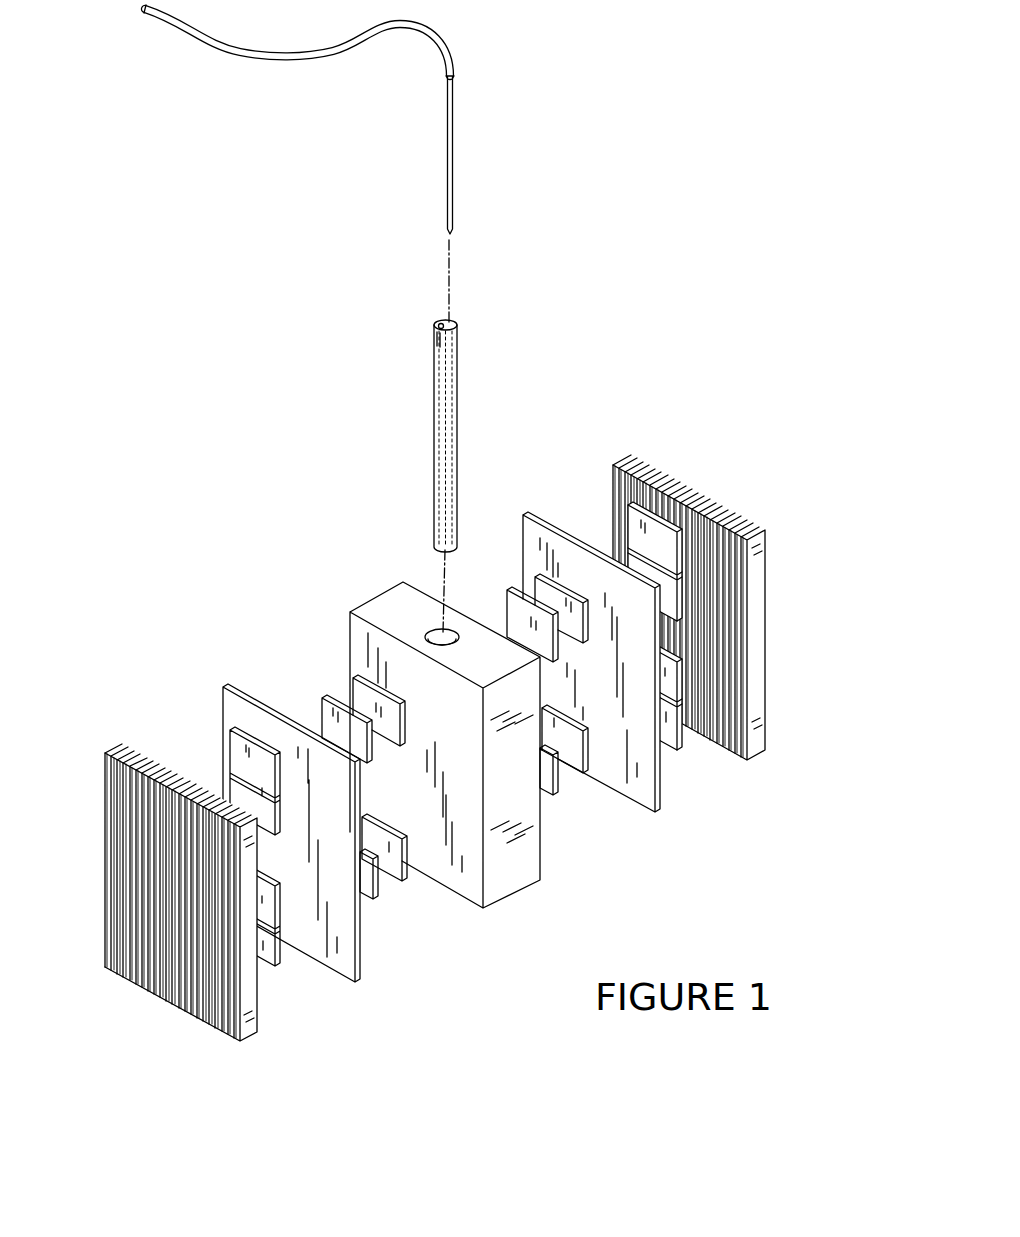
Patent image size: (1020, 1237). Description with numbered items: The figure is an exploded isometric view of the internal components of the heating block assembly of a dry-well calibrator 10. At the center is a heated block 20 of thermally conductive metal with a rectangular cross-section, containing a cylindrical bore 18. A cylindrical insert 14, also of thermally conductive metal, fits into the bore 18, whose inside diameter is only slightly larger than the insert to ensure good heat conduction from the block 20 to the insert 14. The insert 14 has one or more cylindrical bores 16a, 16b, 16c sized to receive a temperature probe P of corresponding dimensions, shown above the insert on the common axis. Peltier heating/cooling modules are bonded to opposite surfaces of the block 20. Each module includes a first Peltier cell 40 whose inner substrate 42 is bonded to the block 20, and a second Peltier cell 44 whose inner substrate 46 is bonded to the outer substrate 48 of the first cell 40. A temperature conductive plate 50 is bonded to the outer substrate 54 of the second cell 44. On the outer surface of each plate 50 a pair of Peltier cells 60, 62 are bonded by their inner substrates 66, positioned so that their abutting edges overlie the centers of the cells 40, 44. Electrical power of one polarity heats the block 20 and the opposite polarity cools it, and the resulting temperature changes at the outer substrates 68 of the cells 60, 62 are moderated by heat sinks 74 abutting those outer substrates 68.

The dry-well calibrator 10 is at (603, 361).
The temperature probe P is at (453, 163).
The cylindrical insert 14 is at (457, 440).
The cylindrical bore 16a is at (455, 325).
The cylindrical bore 16b is at (437, 325).
The cylindrical bore 16c is at (437, 338).
The cylindrical bore 18 is at (440, 633).
The heated block 20 is at (510, 875).
The first Peltier cell 40 is at (496, 603).
The inner substrate 42 is at (506, 632).
The second Peltier cell 44 is at (524, 578).
The inner substrate 46 is at (538, 610).
The outer substrate 48 is at (354, 712).
The temperature conductive plate 50 is at (316, 826).
The outer substrate 54 is at (343, 748).
The Peltier cell 60 is at (621, 498).
The Peltier cell 62 is at (623, 541).
The inner substrate 66 is at (647, 552).
The outer substrate 68 is at (250, 780).
The heat sink 74 is at (118, 853).